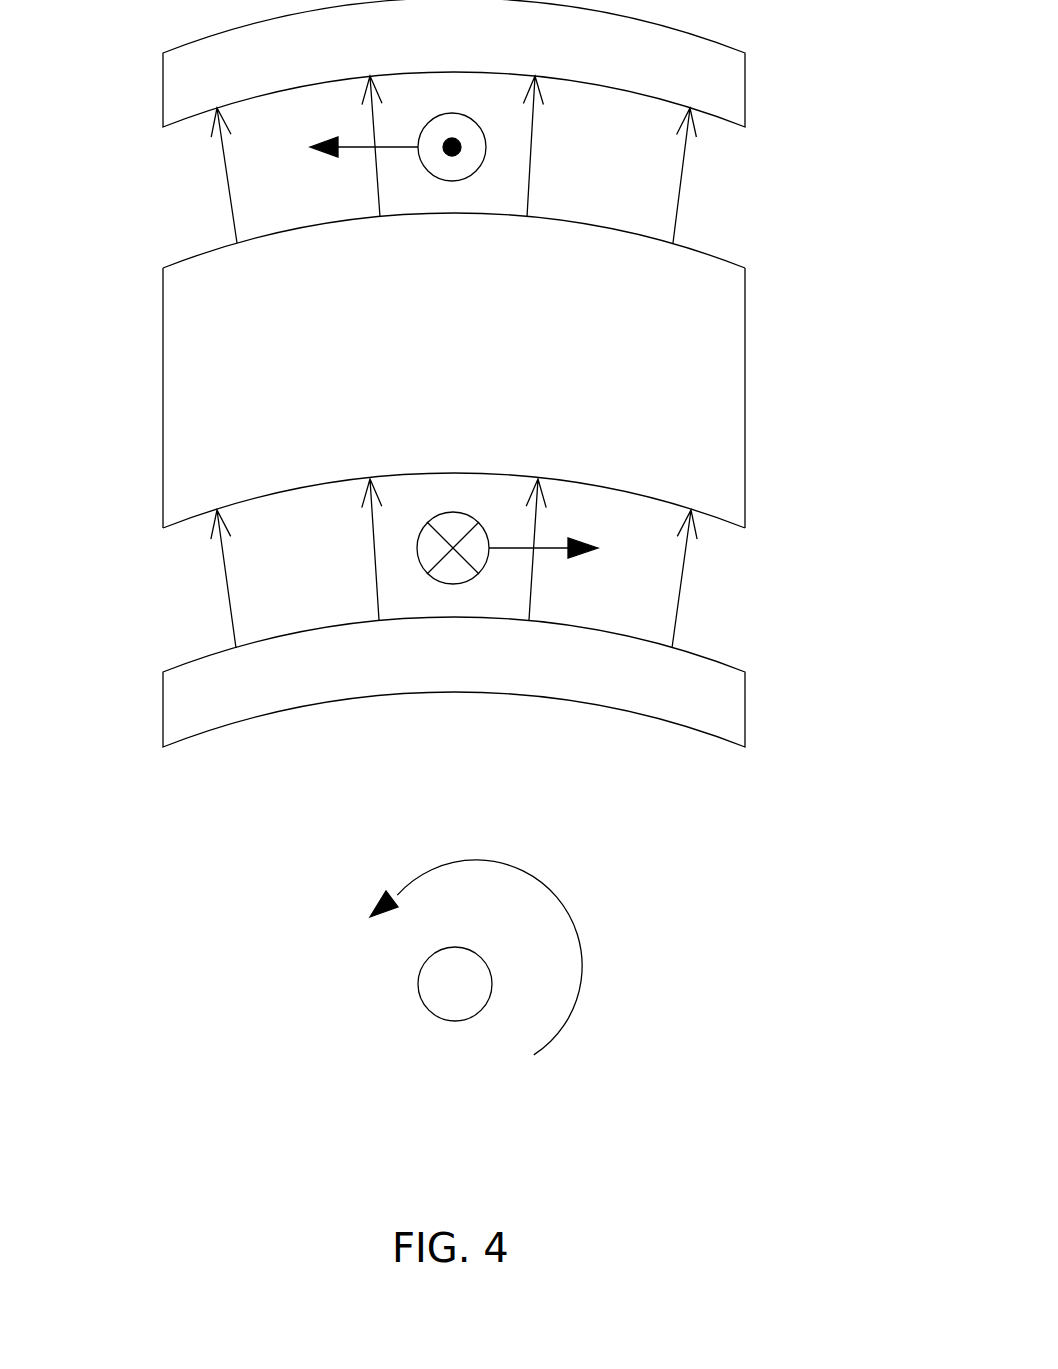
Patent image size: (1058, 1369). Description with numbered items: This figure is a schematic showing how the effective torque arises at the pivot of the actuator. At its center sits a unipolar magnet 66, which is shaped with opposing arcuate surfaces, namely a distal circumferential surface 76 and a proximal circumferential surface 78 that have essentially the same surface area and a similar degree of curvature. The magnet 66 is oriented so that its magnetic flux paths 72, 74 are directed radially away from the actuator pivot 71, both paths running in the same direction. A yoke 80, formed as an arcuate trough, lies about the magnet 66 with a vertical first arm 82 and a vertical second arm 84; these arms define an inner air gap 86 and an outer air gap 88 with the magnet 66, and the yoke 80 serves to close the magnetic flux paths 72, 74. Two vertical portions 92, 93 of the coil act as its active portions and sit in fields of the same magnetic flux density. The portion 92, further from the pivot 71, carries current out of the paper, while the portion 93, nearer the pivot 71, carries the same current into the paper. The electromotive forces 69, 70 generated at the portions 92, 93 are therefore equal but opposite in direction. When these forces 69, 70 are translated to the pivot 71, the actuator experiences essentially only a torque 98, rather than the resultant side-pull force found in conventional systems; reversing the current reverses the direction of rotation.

The unipolar magnet 66 is at (495, 413).
The electromotive force 69 is at (362, 150).
The electromotive force 70 is at (547, 555).
The actuator pivot 71 is at (418, 985).
The magnetic flux path 72 is at (530, 193).
The magnetic flux path 74 is at (238, 620).
The distal circumferential surface 76 is at (712, 257).
The proximal circumferential surface 78 is at (724, 528).
The yoke 80 is at (490, 387).
The vertical first arm 82 is at (662, 80).
The vertical second arm 84 is at (667, 700).
The inner air gap 86 is at (544, 159).
The outer air gap 88 is at (371, 563).
The vertical portion of the coil 92 is at (427, 118).
The vertical portion of the coil 93 is at (435, 517).
The torque 98 is at (538, 918).